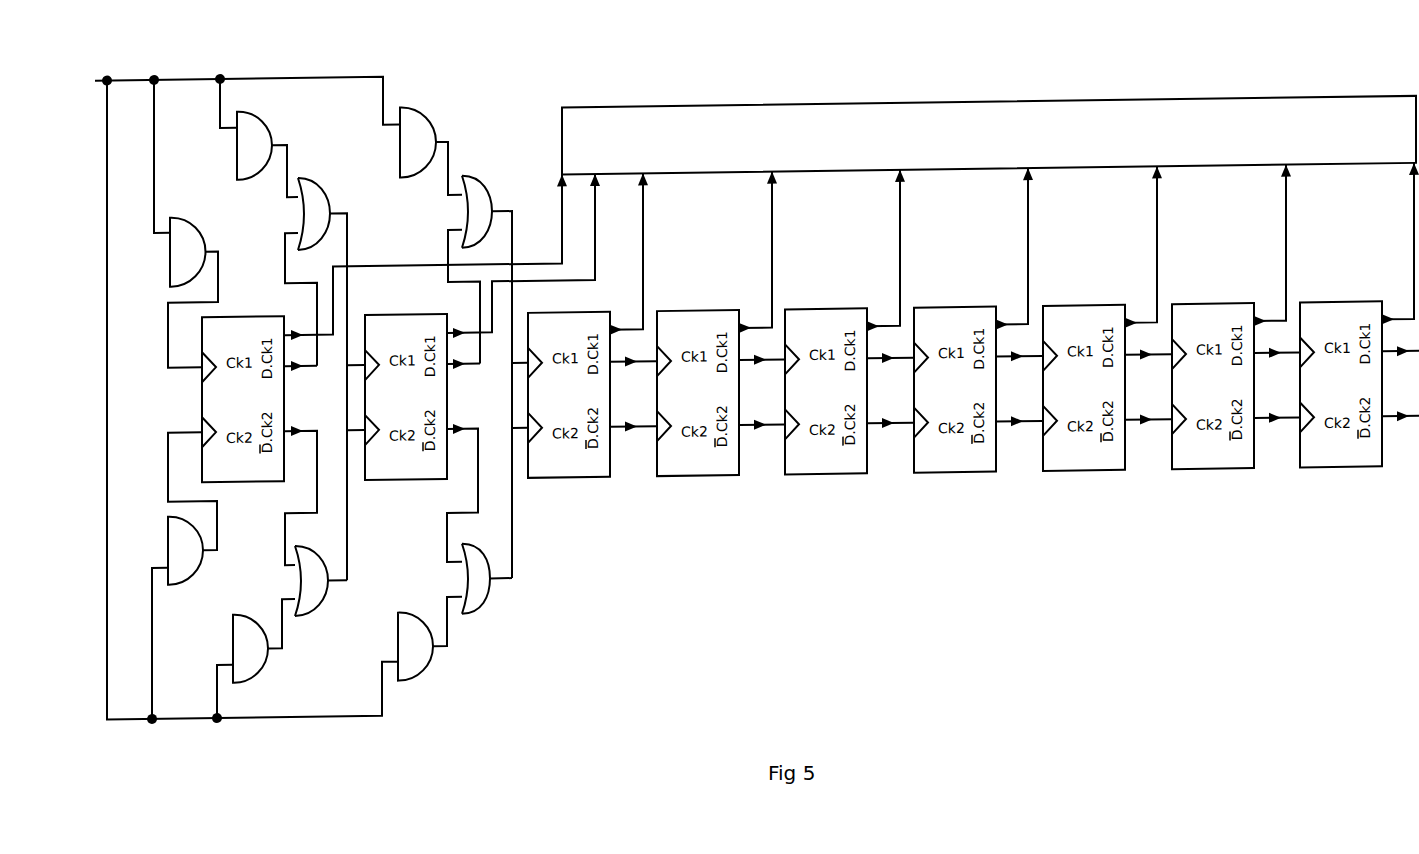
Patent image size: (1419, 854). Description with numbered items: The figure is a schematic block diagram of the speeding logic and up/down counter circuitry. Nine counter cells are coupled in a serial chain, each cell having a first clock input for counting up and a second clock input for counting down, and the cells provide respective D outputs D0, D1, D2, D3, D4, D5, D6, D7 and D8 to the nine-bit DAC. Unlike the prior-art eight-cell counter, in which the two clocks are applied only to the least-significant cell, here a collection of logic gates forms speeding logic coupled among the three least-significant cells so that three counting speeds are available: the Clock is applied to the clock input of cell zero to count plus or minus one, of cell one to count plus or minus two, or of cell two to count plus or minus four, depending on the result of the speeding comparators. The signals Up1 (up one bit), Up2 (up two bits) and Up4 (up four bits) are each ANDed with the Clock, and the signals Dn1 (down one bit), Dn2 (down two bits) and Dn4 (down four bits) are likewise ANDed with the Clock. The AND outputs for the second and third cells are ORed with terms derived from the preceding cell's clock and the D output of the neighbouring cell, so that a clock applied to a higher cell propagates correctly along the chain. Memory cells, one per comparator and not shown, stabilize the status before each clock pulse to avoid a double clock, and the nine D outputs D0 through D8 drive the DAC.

The clock Clock is at (247, 383).
The up 1 bit signal Up1 is at (170, 271).
The up 2 bits signal Up2 is at (237, 168).
The up 4 bits signal Up4 is at (400, 165).
The down 1 bit signal Dn1 is at (168, 534).
The down 2 bits signal Dn2 is at (233, 636).
The down 4 bits signal Dn4 is at (398, 633).
The D output of cell 0 D0 is at (426, 257).
The D output of cell 1 D1 is at (523, 256).
The D output of cell 2 D2 is at (629, 254).
The D output of cell 3 D3 is at (758, 253).
The D output of cell 4 D4 is at (886, 251).
The D output of cell 5 D5 is at (1014, 248).
The D output of cell 6 D6 is at (1143, 246).
The D output of cell 7 D7 is at (1272, 245).
The D output of cell 8 D8 is at (1400, 243).
The 9-bit DAC is at (989, 135).